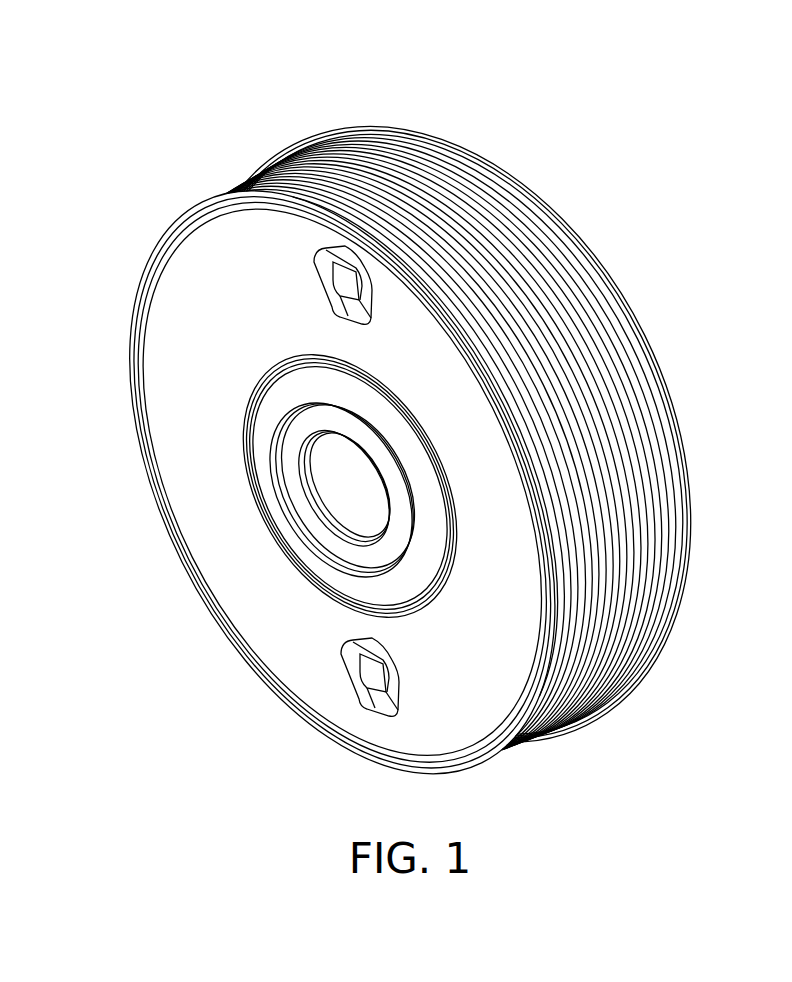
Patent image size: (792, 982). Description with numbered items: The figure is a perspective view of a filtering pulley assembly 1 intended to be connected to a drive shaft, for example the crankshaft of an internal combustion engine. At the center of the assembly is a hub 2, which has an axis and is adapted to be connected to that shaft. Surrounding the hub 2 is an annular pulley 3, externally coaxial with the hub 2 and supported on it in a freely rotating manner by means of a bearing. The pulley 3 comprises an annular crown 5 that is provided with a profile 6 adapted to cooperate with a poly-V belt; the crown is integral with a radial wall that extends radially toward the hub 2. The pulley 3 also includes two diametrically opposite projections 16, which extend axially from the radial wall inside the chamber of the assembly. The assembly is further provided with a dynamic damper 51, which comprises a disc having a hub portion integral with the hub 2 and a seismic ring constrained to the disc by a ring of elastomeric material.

The filtering pulley assembly 1 is at (553, 150).
The hub 2 is at (283, 545).
The annular pulley 3 is at (338, 127).
The annular crown 5 is at (500, 442).
The profile 6 is at (578, 426).
The projections 16 is at (343, 268).
The dynamic damper 51 is at (597, 262).